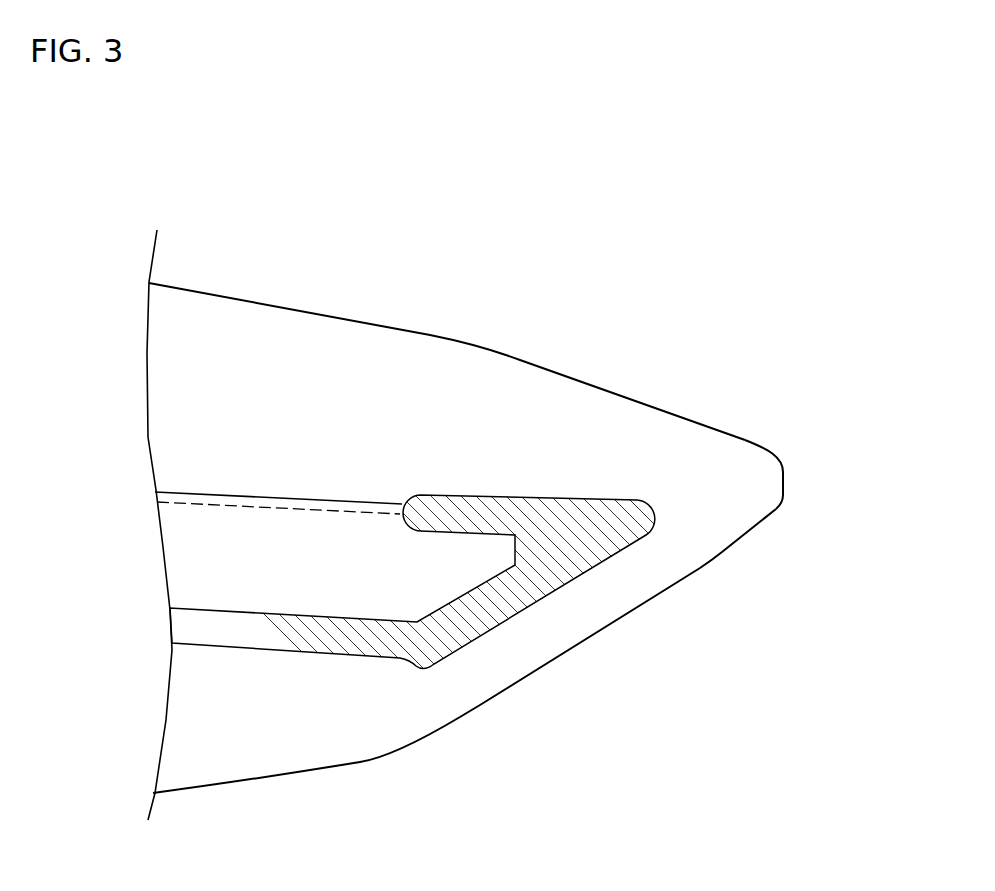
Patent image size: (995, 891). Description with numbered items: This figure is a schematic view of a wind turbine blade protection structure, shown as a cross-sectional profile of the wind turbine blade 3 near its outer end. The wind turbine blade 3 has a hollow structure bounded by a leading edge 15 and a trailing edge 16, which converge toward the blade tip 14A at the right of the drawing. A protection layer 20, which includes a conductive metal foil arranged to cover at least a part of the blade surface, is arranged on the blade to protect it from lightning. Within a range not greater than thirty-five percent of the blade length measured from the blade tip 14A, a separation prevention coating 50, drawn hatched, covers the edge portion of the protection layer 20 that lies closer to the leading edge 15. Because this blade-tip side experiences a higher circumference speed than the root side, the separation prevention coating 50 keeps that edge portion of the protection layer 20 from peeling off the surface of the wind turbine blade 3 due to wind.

The wind turbine blade 3 is at (510, 539).
The trailing edge 16 is at (383, 327).
The leading edge 15 is at (378, 757).
The blade tip 14A is at (785, 480).
The protection layer 20 is at (280, 520).
The separation prevention coating 50 is at (307, 627).